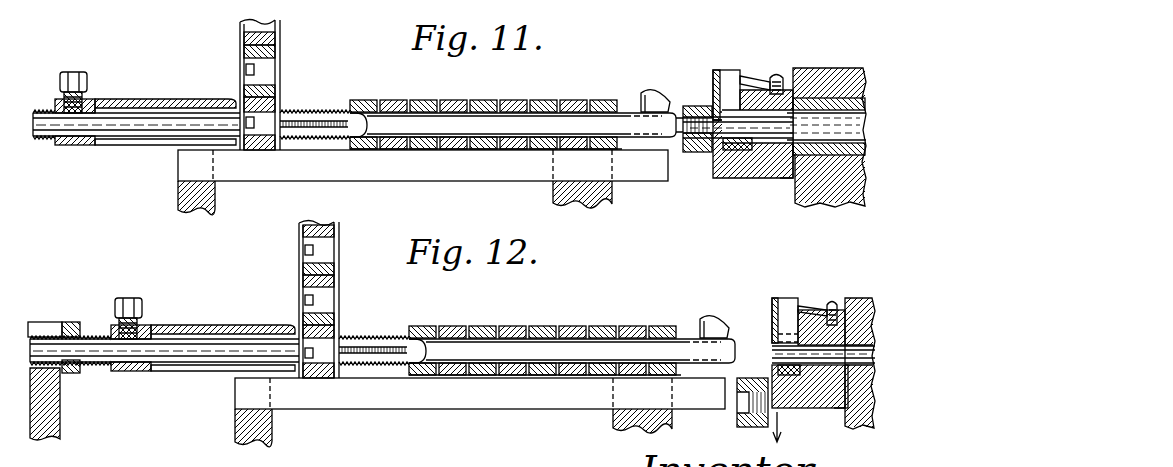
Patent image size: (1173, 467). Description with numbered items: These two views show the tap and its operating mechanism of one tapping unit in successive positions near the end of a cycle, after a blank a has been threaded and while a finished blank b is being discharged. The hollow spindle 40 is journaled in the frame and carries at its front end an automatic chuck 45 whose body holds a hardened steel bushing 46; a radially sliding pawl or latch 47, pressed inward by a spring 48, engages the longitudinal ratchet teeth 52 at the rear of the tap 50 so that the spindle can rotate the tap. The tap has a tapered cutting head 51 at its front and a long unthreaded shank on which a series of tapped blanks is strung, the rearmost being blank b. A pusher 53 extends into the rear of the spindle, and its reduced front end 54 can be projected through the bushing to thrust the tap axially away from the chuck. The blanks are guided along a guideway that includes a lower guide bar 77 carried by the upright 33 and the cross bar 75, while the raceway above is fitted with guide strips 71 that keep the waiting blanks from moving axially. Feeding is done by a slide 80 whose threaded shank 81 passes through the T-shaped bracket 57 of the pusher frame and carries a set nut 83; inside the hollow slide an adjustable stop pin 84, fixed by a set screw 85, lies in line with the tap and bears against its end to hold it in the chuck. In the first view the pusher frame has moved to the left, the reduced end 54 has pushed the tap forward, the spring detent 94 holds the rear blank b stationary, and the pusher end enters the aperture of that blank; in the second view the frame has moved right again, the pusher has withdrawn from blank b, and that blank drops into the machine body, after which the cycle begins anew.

In FIG. 11, the upright 33 is at (216, 201).
In FIG. 12, the upright 33 is at (282, 429).
In FIG. 11, the spindle 40 is at (833, 98).
In FIG. 12, the spindle 40 is at (860, 325).
In FIG. 11, the automatic chuck 45 is at (793, 186).
In FIG. 12, the automatic chuck 45 is at (858, 412).
In FIG. 11, the hardened steel bushing 46 is at (724, 178).
In FIG. 12, the hardened steel bushing 46 is at (789, 358).
In FIG. 11, the pawl or latch 47 is at (731, 70).
In FIG. 12, the pawl or latch 47 is at (791, 300).
In FIG. 11, the spring 48 is at (758, 76).
In FIG. 12, the spring 48 is at (826, 292).
In FIG. 11, the tap 50 is at (503, 122).
In FIG. 12, the tap 50 is at (545, 334).
In FIG. 11, the cutting head 51 is at (313, 110).
In FIG. 12, the cutting head 51 is at (374, 328).
In FIG. 11, the ratchet teeth 52 is at (638, 105).
In FIG. 12, the ratchet teeth 52 is at (572, 324).
In FIG. 11, the pusher 53 is at (822, 136).
In FIG. 11, the reduced front end 54 is at (767, 130).
In FIG. 12, the reduced front end 54 is at (823, 396).
In FIG. 12, the T-shaped bracket 57 is at (74, 404).
In FIG. 11, the guide strips 71 is at (245, 42).
In FIG. 12, the guide strips 71 is at (311, 298).
In FIG. 11, the cross bar 75 is at (605, 202).
In FIG. 12, the cross bar 75 is at (616, 424).
In FIG. 11, the guide bar 77 is at (505, 182).
In FIG. 12, the guide bar 77 is at (480, 415).
In FIG. 11, the slide 80 is at (172, 86).
In FIG. 12, the slide 80 is at (203, 330).
In FIG. 11, the threaded shank 81 is at (37, 141).
In FIG. 12, the threaded shank 81 is at (69, 315).
In FIG. 12, the set nut 83 is at (105, 315).
In FIG. 11, the stop pin 84 is at (130, 139).
In FIG. 12, the stop pin 84 is at (164, 377).
In FIG. 11, the set screw 85 is at (83, 73).
In FIG. 12, the set screw 85 is at (157, 306).
In FIG. 11, the spring detent 94 is at (651, 88).
In FIG. 12, the spring detent 94 is at (719, 306).
In FIG. 11, the blank a is at (366, 100).
In FIG. 12, the blank a is at (427, 326).
In FIG. 11, the rear blank b is at (692, 106).
In FIG. 12, the rear blank b is at (735, 413).